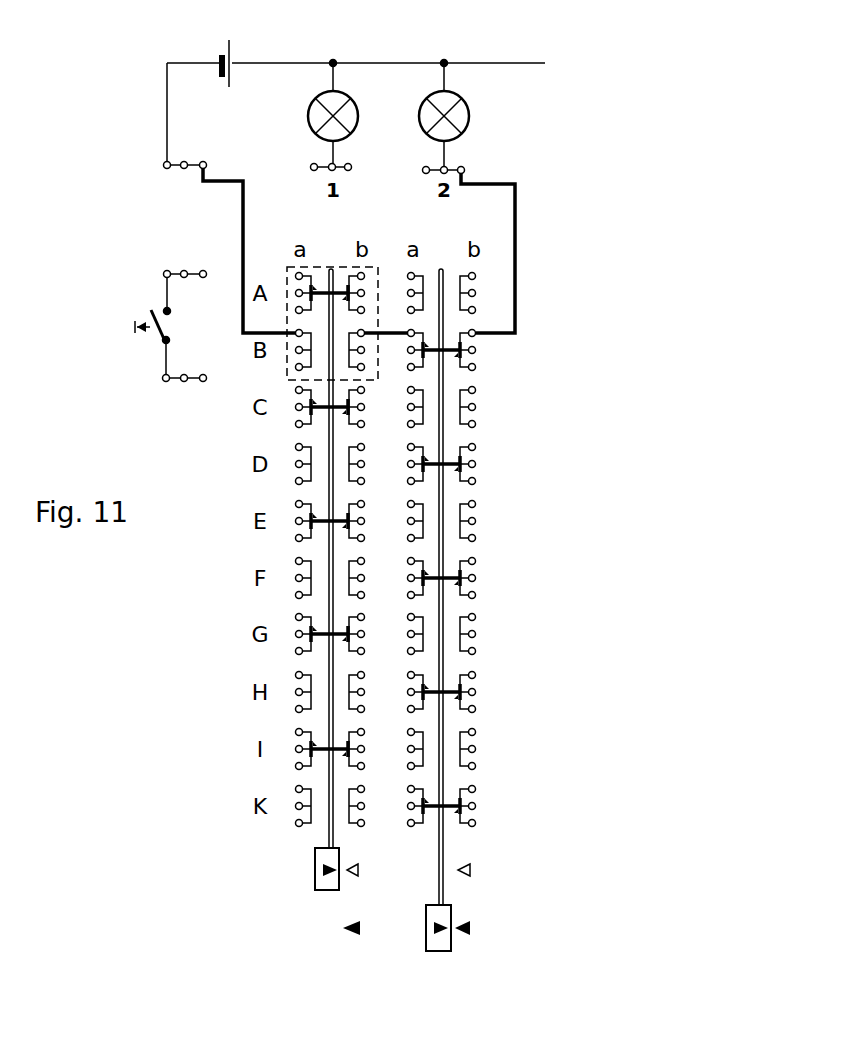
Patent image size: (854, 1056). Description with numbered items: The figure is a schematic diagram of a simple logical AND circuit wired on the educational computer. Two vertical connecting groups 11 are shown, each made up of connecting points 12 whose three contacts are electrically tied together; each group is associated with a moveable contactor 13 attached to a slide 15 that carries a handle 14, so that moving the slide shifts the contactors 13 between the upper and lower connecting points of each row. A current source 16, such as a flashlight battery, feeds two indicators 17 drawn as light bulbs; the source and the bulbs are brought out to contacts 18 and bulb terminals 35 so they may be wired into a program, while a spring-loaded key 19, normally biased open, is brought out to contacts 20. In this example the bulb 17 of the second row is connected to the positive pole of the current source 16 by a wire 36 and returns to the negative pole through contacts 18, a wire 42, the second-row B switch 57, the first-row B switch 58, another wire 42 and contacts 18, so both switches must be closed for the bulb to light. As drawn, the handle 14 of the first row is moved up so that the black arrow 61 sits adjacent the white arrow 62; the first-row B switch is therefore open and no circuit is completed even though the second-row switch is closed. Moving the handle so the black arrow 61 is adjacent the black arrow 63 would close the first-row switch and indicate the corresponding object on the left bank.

The connecting group 11 is at (310, 568).
The connecting point 12 is at (292, 298).
The moveable contactor 13 is at (326, 514).
The handle 14 is at (331, 878).
The slide 15 is at (328, 601).
The current source 16 is at (226, 48).
The indicator 17 is at (309, 117).
The contacts 18 is at (177, 173).
The spring loaded key 19 is at (161, 331).
The contacts 20 is at (183, 270).
The contact set 35 is at (331, 153).
The wire 36 is at (388, 63).
The wire 42 is at (243, 240).
The second selector switch 57 is at (447, 356).
The contact bridge 58 is at (325, 290).
The black arrow 61 is at (324, 868).
The white arrow 62 is at (359, 866).
The black arrow 63 is at (356, 924).